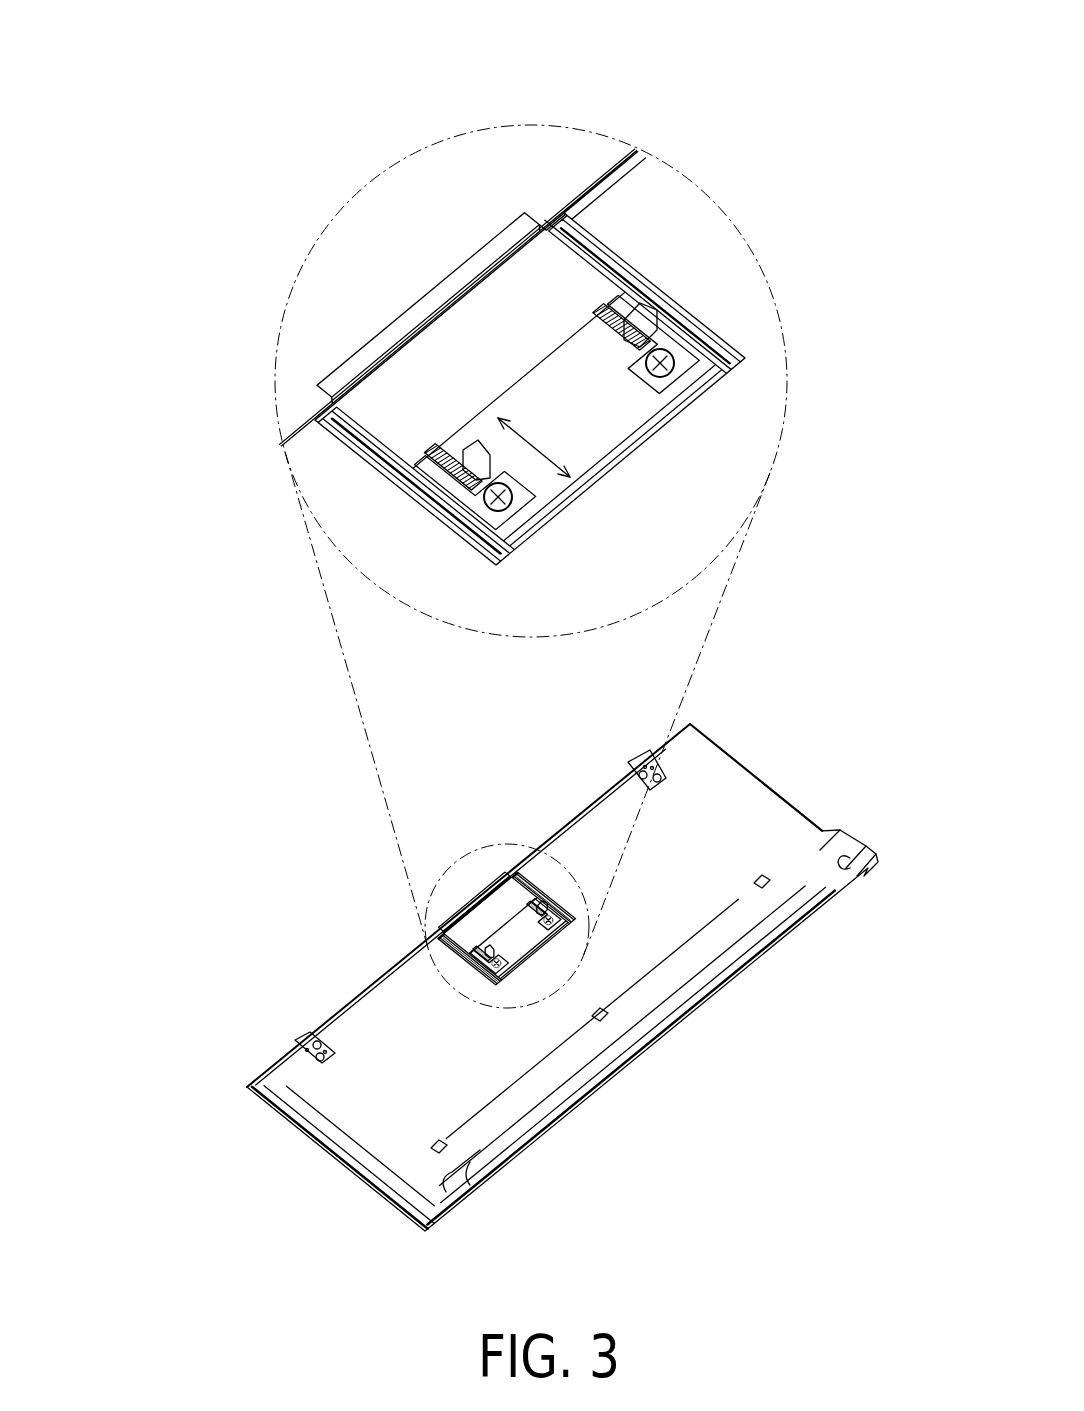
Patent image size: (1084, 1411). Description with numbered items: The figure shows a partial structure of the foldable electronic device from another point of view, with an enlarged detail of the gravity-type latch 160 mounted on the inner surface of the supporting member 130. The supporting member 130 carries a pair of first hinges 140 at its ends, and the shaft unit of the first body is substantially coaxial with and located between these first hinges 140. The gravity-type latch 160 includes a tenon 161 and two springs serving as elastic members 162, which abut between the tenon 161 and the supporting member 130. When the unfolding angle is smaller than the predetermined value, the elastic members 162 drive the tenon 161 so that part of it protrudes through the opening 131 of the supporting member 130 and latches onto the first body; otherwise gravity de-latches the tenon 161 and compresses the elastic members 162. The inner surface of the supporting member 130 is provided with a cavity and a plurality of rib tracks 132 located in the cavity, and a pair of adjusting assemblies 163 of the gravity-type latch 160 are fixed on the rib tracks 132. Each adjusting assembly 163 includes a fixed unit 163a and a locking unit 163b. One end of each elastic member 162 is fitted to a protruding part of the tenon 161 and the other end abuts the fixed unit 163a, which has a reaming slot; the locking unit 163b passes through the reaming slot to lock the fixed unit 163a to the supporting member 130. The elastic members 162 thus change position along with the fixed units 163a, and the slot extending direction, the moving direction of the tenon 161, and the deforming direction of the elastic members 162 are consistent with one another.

The supporting member 130 is at (733, 473).
The opening 131 is at (548, 229).
The rib tracks 132 is at (720, 368).
The first hinges 140 is at (663, 783).
The gravity-type latch 160 is at (400, 228).
The tenon 161 is at (350, 372).
The elastic member 162 is at (665, 352).
The adjusting assembly 163 is at (173, 8).
The fixed unit 163a is at (707, 372).
The locking unit 163b is at (664, 352).